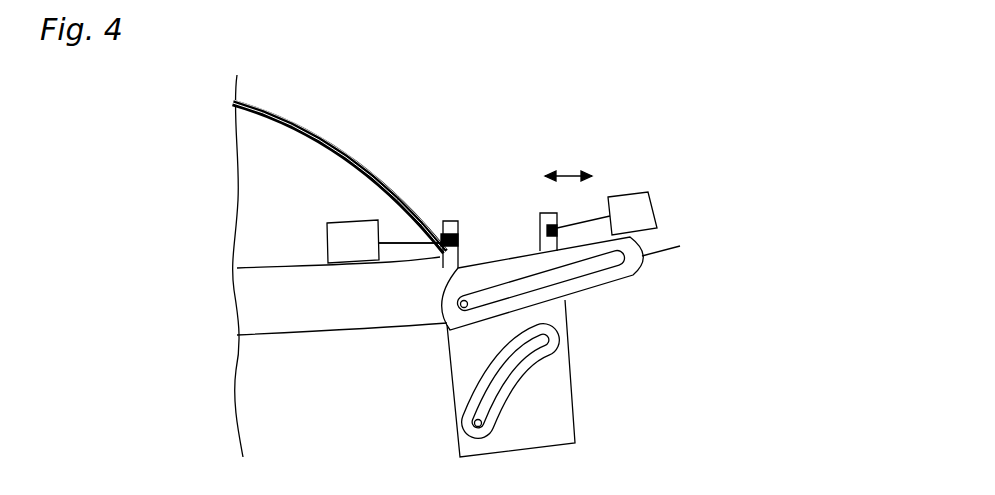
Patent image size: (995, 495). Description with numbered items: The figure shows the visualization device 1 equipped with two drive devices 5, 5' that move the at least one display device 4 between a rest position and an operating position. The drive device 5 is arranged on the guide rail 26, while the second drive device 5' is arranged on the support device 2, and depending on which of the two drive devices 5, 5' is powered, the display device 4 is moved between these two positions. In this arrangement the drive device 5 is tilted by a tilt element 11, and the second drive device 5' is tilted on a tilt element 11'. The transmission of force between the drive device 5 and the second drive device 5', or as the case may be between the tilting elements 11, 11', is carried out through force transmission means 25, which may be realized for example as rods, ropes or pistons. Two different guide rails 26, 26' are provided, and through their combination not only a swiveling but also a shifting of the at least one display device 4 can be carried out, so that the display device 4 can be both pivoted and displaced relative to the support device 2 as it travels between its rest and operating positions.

The visualization device 1 is at (790, 50).
The support device 2 is at (343, 305).
The display device 4 is at (557, 412).
The drive device 5 is at (665, 135).
The second drive device 5' is at (385, 140).
The tilt element 11 is at (552, 151).
The tilt element 11' is at (472, 161).
The force transmission means 25 is at (402, 241).
The guide rail 26 is at (605, 274).
The guide rail 26' is at (595, 363).